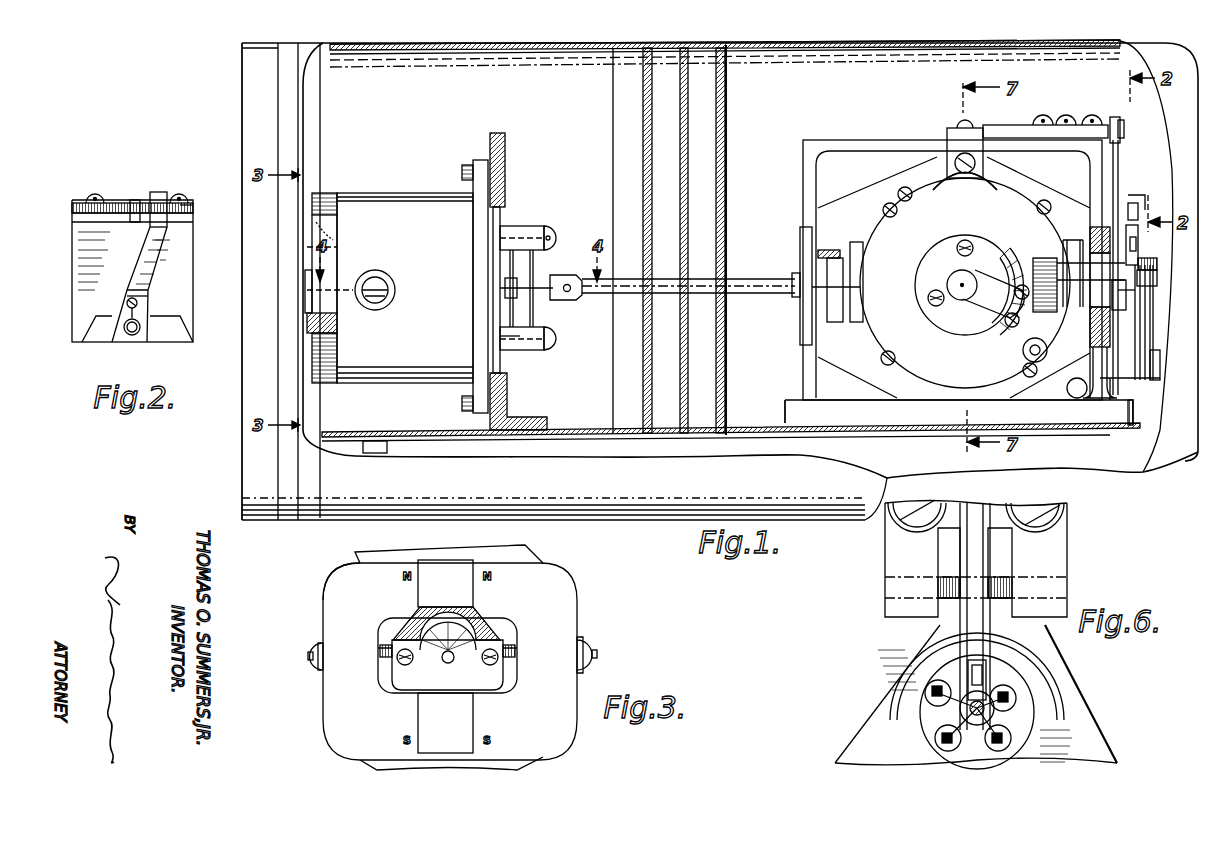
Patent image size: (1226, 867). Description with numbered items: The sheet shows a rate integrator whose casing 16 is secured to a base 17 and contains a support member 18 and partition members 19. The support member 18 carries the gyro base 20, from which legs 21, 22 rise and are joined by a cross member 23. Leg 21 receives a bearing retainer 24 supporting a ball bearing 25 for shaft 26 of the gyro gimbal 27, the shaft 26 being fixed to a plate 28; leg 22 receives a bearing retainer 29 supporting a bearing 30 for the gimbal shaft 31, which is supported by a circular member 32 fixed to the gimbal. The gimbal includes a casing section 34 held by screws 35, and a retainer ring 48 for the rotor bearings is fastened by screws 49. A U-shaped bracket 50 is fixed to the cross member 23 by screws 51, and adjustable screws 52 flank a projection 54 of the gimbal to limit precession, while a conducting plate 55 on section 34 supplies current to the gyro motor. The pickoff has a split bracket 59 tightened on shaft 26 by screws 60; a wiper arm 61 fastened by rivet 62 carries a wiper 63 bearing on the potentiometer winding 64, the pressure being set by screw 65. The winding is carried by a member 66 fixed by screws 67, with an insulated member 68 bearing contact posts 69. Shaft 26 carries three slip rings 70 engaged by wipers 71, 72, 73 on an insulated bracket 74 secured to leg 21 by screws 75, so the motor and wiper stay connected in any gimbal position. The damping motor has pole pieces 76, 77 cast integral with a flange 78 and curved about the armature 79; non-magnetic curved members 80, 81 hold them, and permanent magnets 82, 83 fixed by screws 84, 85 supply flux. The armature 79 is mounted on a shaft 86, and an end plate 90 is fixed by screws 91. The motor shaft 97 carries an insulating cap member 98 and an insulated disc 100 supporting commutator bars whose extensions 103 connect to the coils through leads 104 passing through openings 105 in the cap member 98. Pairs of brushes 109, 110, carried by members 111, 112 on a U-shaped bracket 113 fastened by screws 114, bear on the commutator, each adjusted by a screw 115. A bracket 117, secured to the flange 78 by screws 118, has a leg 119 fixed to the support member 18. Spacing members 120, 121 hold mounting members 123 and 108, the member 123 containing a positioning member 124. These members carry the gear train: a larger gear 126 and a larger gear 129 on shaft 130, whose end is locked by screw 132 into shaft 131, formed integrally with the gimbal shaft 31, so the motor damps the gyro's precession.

In FIG. 1, the casing 16 is at (955, 42).
In FIG. 1, the base 17 is at (248, 78).
In FIG. 1, the support member 18 is at (575, 432).
In FIG. 1, the partition members 19 is at (727, 152).
In FIG. 1, the base 20 is at (790, 400).
In FIG. 1, the leg 21 is at (1095, 340).
In FIG. 2, the leg 21 is at (193, 280).
In FIG. 1, the leg 22 is at (803, 357).
In FIG. 1, the cross member 23 is at (860, 148).
In FIG. 1, the bearing retainer 24 is at (1095, 228).
In FIG. 2, the bearing retainer 24 is at (96, 340).
In FIG. 1, the ball bearing 25 is at (1058, 263).
In FIG. 1, the shaft 26 is at (1115, 303).
In FIG. 1, the gyro gimbal 27 is at (960, 385).
In FIG. 1, the plate 28 is at (1075, 240).
In FIG. 1, the bearing retainer 29 is at (828, 250).
In FIG. 1, the bearing 30 is at (850, 278).
In FIG. 1, the gimbal shaft 31 is at (800, 300).
In FIG. 1, the circular member 32 is at (855, 242).
In FIG. 1, the casing section 34 is at (965, 281).
In FIG. 1, the screws 35 is at (883, 357).
In FIG. 1, the retainer ring 48 is at (992, 255).
In FIG. 1, the screws 49 is at (930, 302).
In FIG. 1, the U-shaped bracket 50 is at (947, 135).
In FIG. 1, the screws 51 is at (967, 125).
In FIG. 1, the adjustable screw 52 is at (965, 155).
In FIG. 1, the projection 54 is at (994, 175).
In FIG. 1, the conducting plate 55 is at (1000, 325).
In FIG. 1, the split bracket 59 is at (1135, 201).
In FIG. 2, the split bracket 59 is at (138, 305).
In FIG. 1, the screws 60 is at (1138, 252).
In FIG. 1, the wiper arm 61 is at (1120, 158).
In FIG. 2, the wiper arm 61 is at (167, 250).
In FIG. 1, the rivet 62 is at (1136, 242).
In FIG. 2, the rivet 62 is at (133, 337).
In FIG. 1, the wiper 63 is at (1112, 117).
In FIG. 2, the wiper 63 is at (140, 222).
In FIG. 1, the potentiometer winding 64 is at (1124, 128).
In FIG. 2, the potentiometer winding 64 is at (122, 205).
In FIG. 1, the screw 65 is at (1138, 213).
In FIG. 2, the screw 65 is at (126, 303).
In FIG. 1, the member 66 is at (1020, 130).
In FIG. 2, the member 66 is at (78, 210).
In FIG. 1, the screws 67 is at (1043, 117).
In FIG. 1, the insulated member 68 is at (1066, 117).
In FIG. 2, the insulated member 68 is at (193, 207).
In FIG. 1, the contact posts 69 is at (1092, 115).
In FIG. 2, the contact posts 69 is at (180, 192).
In FIG. 1, the slip rings 70 is at (1157, 276).
In FIG. 1, the wiper 71 is at (1136, 305).
In FIG. 1, the wiper 72 is at (1146, 297).
In FIG. 1, the wiper 73 is at (1152, 318).
In FIG. 1, the insulated bracket 74 is at (1130, 392).
In FIG. 1, the screws 75 is at (1157, 380).
In FIG. 1, the pole piece 76 is at (325, 192).
In FIG. 3, the pole piece 76 is at (445, 583).
In FIG. 1, the pole piece 77 is at (328, 383).
In FIG. 3, the pole piece 77 is at (445, 723).
In FIG. 1, the flange 78 is at (480, 388).
In FIG. 3, the motor armature 79 is at (458, 630).
In FIG. 1, the curved member 80 is at (338, 305).
In FIG. 3, the curved member 80 is at (508, 635).
In FIG. 3, the curved member 81 is at (410, 620).
In FIG. 1, the permanent magnet 82 is at (383, 195).
In FIG. 3, the permanent magnet 82 is at (560, 602).
In FIG. 3, the permanent magnet 83 is at (337, 593).
In FIG. 1, the screw 84 is at (382, 278).
In FIG. 3, the screw 84 is at (596, 652).
In FIG. 3, the screw 85 is at (310, 645).
In FIG. 3, the shaft 86 is at (448, 663).
In FIG. 1, the end plate 90 is at (307, 290).
In FIG. 3, the end plate 90 is at (410, 690).
In FIG. 3, the screws 91 is at (400, 665).
In FIG. 6, the motor shaft 97 is at (938, 722).
In FIG. 6, the cap member 98 is at (1020, 735).
In FIG. 6, the insulated disc 100 is at (995, 708).
In FIG. 6, the extensions 103 is at (1000, 742).
In FIG. 6, the leads 104 is at (1012, 708).
In FIG. 6, the openings 105 is at (1010, 700).
In FIG. 1, the support member 108 is at (548, 232).
In FIG. 6, the brushes 109 is at (990, 650).
In FIG. 6, the brushes 110 is at (935, 648).
In FIG. 6, the member 111 is at (988, 505).
In FIG. 6, the member 112 is at (963, 505).
In FIG. 6, the U-shaped bracket 113 is at (1045, 570).
In FIG. 6, the screws 114 is at (1067, 517).
In FIG. 6, the screw 115 is at (893, 589).
In FIG. 1, the bracket 117 is at (505, 150).
In FIG. 1, the screws 118 is at (462, 403).
In FIG. 1, the leg 119 is at (520, 428).
In FIG. 1, the spacing member 120 is at (520, 230).
In FIG. 1, the spacing member 121 is at (527, 350).
In FIG. 1, the mounting member 123 is at (505, 337).
In FIG. 6, the mounting member 123 is at (1080, 718).
In FIG. 1, the positioning member 124 is at (508, 305).
In FIG. 6, the positioning member 124 is at (1045, 672).
In FIG. 1, the gear 126 is at (533, 318).
In FIG. 1, the gear 129 is at (508, 262).
In FIG. 1, the shaft 130 is at (558, 278).
In FIG. 1, the shaft 131 is at (754, 278).
In FIG. 1, the screw 132 is at (569, 292).